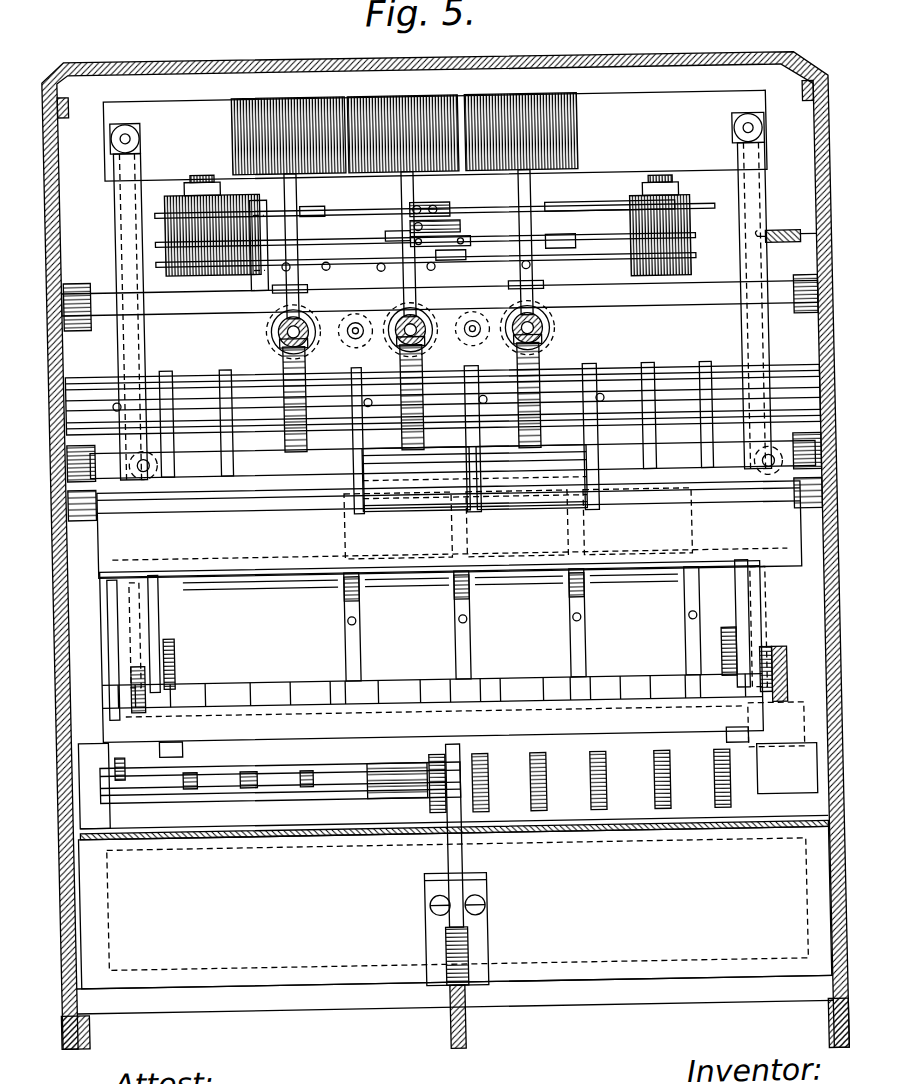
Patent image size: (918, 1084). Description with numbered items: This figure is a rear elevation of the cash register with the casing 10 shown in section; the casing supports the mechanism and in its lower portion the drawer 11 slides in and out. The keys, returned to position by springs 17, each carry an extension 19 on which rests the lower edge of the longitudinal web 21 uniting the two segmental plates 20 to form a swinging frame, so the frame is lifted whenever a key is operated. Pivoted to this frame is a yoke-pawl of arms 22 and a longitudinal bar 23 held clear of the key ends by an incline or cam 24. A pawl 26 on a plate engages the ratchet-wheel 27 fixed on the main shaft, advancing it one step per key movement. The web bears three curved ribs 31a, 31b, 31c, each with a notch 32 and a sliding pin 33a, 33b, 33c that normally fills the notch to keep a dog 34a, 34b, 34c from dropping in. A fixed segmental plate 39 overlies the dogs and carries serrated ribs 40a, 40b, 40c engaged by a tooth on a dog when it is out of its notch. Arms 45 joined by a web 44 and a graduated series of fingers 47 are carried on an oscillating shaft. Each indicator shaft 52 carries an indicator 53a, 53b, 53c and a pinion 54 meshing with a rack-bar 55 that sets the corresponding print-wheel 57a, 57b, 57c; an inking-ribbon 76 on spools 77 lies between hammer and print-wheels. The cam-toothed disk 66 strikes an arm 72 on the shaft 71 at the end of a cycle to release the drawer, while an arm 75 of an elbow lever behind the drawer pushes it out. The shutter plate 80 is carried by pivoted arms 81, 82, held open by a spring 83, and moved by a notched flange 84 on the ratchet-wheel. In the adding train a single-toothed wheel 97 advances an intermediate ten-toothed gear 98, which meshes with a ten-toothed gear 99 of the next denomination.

The casing 10 is at (58, 229).
The drawer 11 is at (455, 907).
The springs 17 is at (573, 786).
The extension 19 is at (165, 699).
The segmental plates 20 is at (145, 633).
The longitudinal web 21 is at (635, 617).
The arms 22 is at (160, 690).
The longitudinal bar 23 is at (436, 724).
The incline or cam 24 is at (143, 752).
The pawl 26 is at (126, 622).
The ratchet-wheel 27 is at (132, 698).
The rib 31a is at (566, 667).
The rib 31b is at (447, 650).
The rib 31c is at (330, 668).
The notch 32 is at (333, 630).
The sliding pin 33a is at (574, 630).
The sliding pin 33b is at (458, 630).
The sliding pin 33c is at (340, 628).
The dog 34a is at (557, 600).
The dog 34b is at (449, 603).
The dog 34c is at (331, 600).
The fixed segmental plate 39 is at (449, 530).
The serrated rib 40a is at (573, 550).
The serrated rib 40b is at (456, 551).
The serrated rib 40c is at (340, 550).
The web 44 is at (474, 478).
The arms 45 is at (622, 449).
The fingers 47 is at (152, 447).
The indicator shaft 52 is at (345, 276).
The indicator 53a is at (525, 128).
The indicator 53b is at (392, 124).
The indicator 53c is at (268, 118).
The pinion 54 is at (302, 215).
The rack-bar 55 is at (250, 215).
The print-wheel 57a is at (466, 251).
The print-wheel 57b is at (458, 234).
The print-wheel 57c is at (435, 216).
The cam-toothed disk 66 is at (99, 655).
The shaft 71 is at (268, 790).
The arm 72 is at (100, 770).
The arm of elbow lever 75 is at (443, 859).
The inking-ribbon 76 is at (560, 216).
The spools 77 is at (188, 218).
The shutter plate 80 is at (435, 135).
The pivoted arm 81 is at (738, 340).
The pivoted arm 82 is at (118, 272).
The spring 83 is at (777, 244).
The notched flange 84 is at (770, 692).
The single-toothed wheel 97 is at (272, 340).
The intermediate ten-toothed gear 98 is at (338, 348).
The ten-toothed gear 99 is at (392, 352).